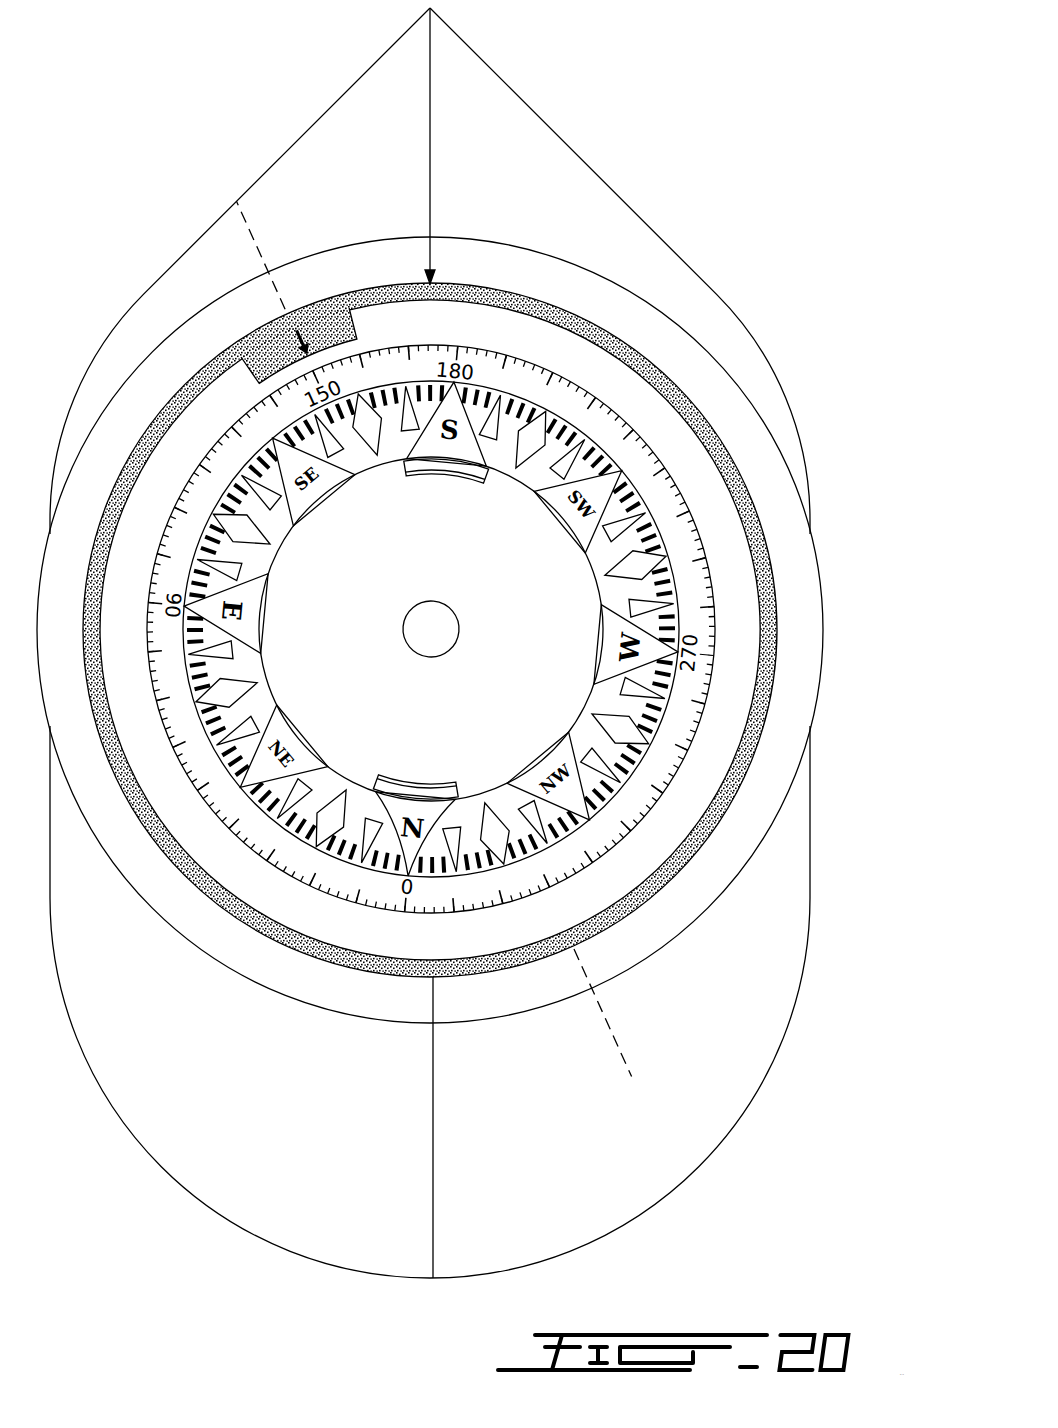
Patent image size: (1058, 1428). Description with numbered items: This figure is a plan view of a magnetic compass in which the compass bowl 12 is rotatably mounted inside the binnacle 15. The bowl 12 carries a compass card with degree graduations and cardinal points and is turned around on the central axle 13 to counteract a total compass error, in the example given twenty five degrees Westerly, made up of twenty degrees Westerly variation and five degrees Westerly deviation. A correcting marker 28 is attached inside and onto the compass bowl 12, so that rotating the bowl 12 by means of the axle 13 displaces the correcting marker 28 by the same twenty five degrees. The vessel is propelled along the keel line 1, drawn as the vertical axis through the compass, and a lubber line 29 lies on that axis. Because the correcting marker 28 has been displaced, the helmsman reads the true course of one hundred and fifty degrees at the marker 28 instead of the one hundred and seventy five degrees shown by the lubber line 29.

The keel line 1 is at (431, 55).
The compass bowl 12 is at (680, 873).
The axle 13 is at (472, 633).
The binnacle 15 is at (826, 665).
The correcting marker 28 is at (283, 311).
The lubber line 29 is at (419, 279).